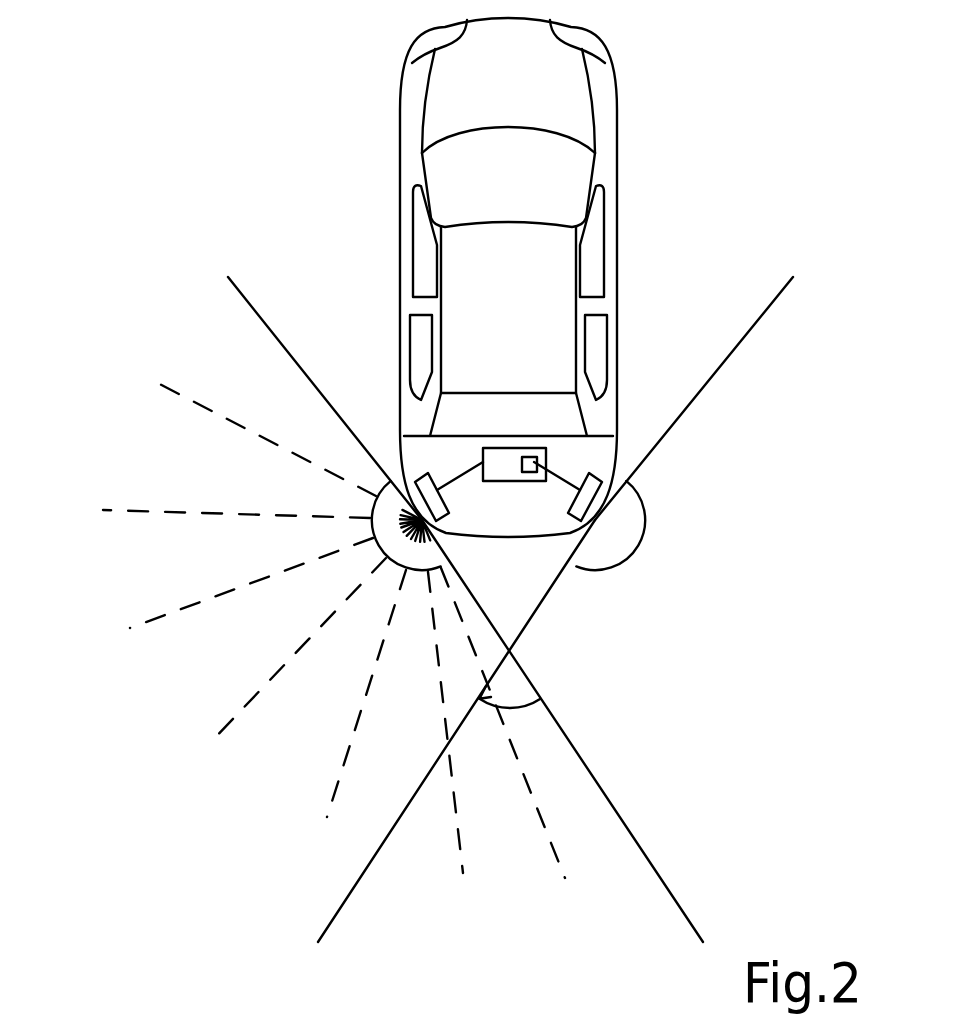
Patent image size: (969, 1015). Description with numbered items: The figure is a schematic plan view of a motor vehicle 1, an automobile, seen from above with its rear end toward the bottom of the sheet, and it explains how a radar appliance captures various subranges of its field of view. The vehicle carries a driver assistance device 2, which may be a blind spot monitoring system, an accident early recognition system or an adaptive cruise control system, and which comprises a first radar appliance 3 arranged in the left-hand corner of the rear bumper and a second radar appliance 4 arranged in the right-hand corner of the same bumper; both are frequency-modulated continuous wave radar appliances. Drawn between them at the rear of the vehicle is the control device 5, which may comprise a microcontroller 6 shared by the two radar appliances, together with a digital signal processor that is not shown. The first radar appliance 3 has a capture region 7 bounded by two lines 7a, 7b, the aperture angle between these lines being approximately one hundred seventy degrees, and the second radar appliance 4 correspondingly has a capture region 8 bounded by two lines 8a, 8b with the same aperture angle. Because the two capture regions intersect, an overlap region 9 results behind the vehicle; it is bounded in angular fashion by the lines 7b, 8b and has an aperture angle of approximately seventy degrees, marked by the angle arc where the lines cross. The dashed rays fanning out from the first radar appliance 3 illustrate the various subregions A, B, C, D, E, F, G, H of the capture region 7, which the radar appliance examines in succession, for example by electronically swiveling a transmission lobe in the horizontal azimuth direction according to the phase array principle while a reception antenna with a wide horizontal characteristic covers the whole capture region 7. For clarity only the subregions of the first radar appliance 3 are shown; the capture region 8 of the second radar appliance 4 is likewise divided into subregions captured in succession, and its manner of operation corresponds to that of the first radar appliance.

The motor vehicle 1 is at (402, 306).
The driver assistance device 2 is at (587, 450).
The first radar appliance 3 is at (447, 507).
The second radar appliance 4 is at (571, 507).
The control device 5 is at (497, 457).
The microcontroller 6 is at (530, 457).
The capture region 7 is at (279, 551).
The line 7a is at (274, 334).
The line 7b is at (666, 886).
The capture region 8 is at (678, 517).
The line 8a is at (776, 297).
The line 8b is at (350, 891).
The overlap region 9 is at (500, 814).
The subregion A is at (202, 346).
The subregion B is at (160, 461).
The subregion C is at (160, 568).
The subregion D is at (188, 675).
The subregion E is at (270, 750).
The subregion F is at (393, 778).
The subregion G is at (512, 842).
The subregion H is at (588, 810).